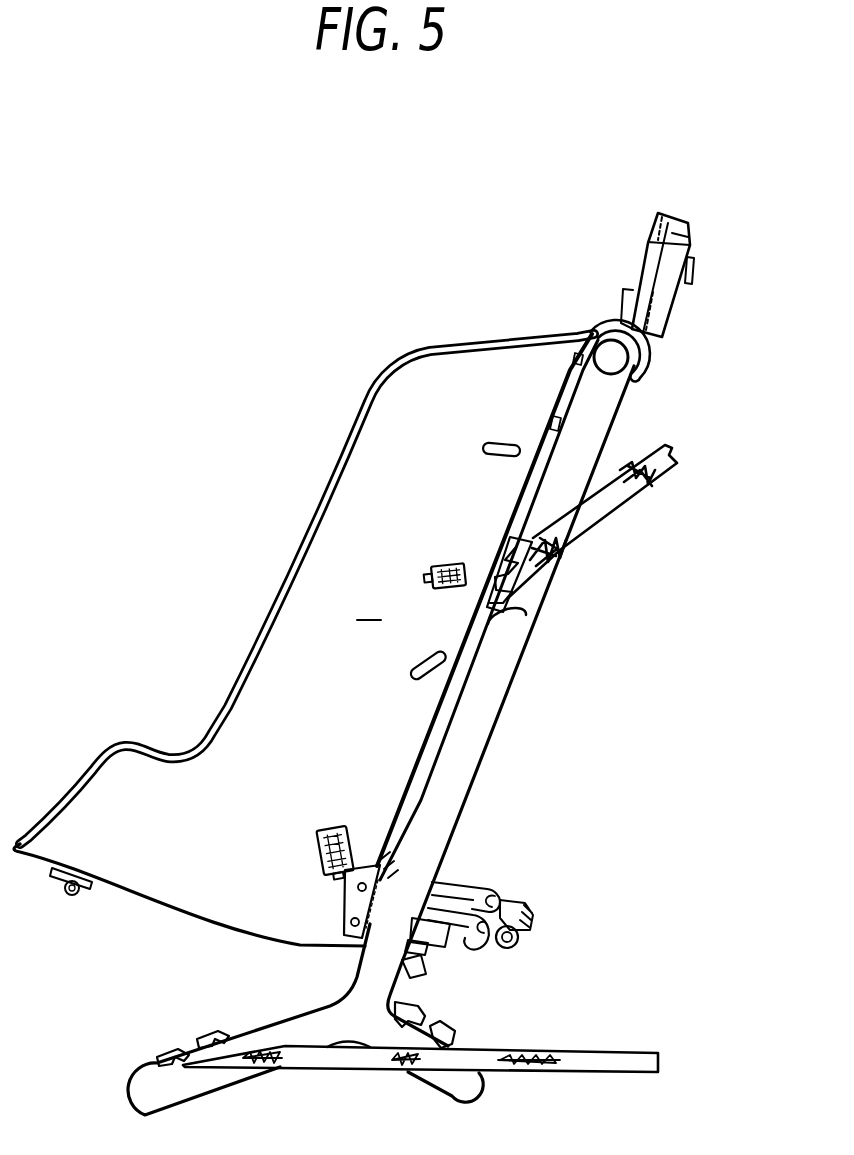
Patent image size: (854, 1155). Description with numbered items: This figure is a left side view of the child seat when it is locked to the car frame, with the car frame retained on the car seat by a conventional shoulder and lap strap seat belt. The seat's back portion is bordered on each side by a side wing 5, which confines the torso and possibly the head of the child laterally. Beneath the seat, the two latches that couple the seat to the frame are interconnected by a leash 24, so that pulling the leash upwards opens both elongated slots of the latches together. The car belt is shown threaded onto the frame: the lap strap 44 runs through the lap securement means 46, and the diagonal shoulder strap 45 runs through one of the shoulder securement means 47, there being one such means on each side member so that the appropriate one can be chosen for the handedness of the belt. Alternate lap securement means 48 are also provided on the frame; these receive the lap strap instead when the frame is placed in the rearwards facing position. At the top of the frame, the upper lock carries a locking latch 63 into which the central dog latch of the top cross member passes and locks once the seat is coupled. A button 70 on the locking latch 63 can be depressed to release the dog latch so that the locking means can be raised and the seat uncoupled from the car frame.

The side wing 5 is at (304, 640).
The leash 24 is at (533, 927).
The lap strap 44 is at (606, 1055).
The diagonal shoulder strap 45 is at (659, 478).
The lap securement means 46 is at (160, 1052).
The shoulder securement means 47 is at (497, 604).
The alternate lap securement means 48 is at (450, 1032).
The locking latch 63 is at (680, 303).
The button 70 is at (694, 258).